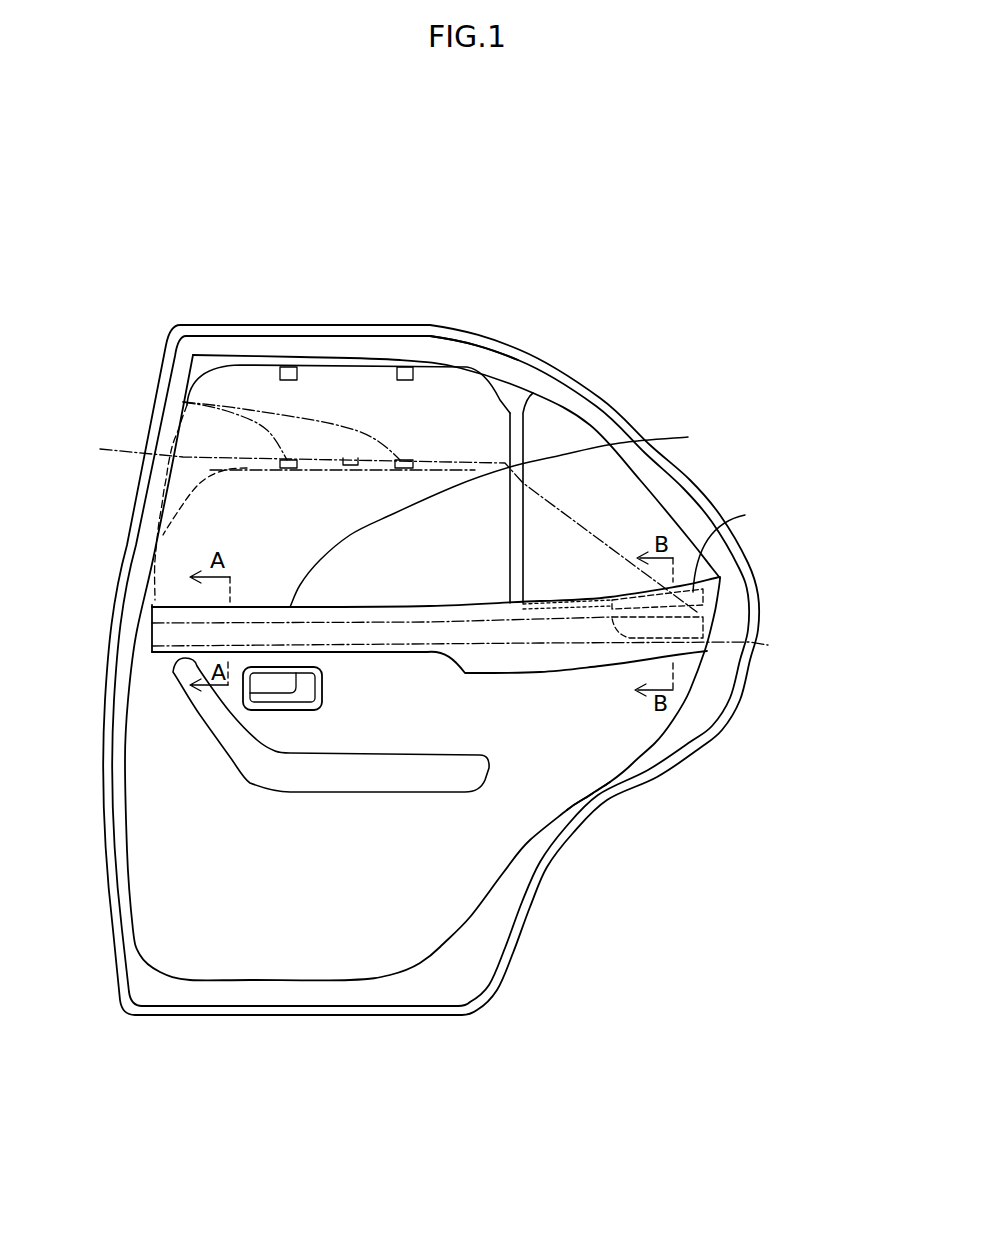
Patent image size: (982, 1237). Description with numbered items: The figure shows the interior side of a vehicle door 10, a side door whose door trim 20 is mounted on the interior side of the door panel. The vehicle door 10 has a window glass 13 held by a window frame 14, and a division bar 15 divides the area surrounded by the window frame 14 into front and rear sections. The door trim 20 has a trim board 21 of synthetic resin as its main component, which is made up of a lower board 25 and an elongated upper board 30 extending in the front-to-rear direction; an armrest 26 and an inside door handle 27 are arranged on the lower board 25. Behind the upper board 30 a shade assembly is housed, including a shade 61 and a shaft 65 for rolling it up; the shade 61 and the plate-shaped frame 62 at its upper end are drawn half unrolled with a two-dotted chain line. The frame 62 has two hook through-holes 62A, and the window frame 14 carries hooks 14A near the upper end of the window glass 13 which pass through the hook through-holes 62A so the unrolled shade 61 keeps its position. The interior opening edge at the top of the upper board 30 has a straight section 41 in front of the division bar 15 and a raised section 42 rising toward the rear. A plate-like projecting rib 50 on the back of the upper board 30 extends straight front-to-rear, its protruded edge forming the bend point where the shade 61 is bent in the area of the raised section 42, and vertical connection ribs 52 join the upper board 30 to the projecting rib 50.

The vehicle door 10 is at (174, 292).
The window glass 13 is at (463, 388).
The window frame 14 is at (233, 345).
The hooks 14A is at (290, 367).
The division bar 15 is at (515, 435).
The door trim 20 is at (557, 913).
The trim board 21 is at (462, 746).
The lower board 25 is at (557, 772).
The armrest 26 is at (378, 773).
The inside door handle 27 is at (270, 697).
The upper board 30 is at (570, 660).
The straight section 41 is at (504, 518).
The raised section 42 is at (745, 515).
The projecting rib 50 is at (500, 639).
The connection ribs 52 is at (703, 597).
The shade 61 is at (183, 557).
The frame 62 is at (385, 526).
The hook through-holes 62A is at (183, 402).
The shaft 65 is at (177, 635).